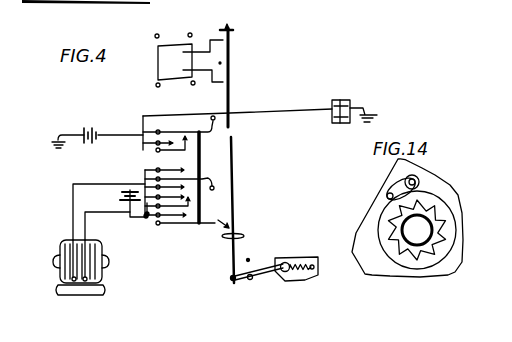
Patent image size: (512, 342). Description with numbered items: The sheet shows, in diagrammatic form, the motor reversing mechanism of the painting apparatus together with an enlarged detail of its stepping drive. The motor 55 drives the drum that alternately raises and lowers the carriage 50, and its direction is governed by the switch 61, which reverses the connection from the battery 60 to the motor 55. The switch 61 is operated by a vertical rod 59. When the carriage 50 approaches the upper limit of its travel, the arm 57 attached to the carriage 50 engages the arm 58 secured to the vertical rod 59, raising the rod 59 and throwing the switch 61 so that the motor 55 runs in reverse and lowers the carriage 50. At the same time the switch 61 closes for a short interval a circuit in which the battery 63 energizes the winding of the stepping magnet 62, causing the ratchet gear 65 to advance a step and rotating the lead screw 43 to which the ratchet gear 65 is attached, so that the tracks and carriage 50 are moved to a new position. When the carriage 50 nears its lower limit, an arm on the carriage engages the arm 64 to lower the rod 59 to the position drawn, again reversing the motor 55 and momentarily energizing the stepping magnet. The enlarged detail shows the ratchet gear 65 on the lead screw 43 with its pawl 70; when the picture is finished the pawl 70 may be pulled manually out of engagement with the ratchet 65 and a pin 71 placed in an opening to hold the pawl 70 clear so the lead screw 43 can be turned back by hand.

In FIG. 4, the carriage 50 is at (158, 66).
In FIG. 4, the arm 57 is at (210, 39).
In FIG. 4, the arm 58 is at (228, 27).
In FIG. 4, the vertical rod 59 is at (231, 90).
In FIG. 4, the stepping magnet 62 is at (342, 100).
In FIG. 4, the battery 63 is at (90, 125).
In FIG. 4, the switch 61 is at (194, 232).
In FIG. 4, the battery 60 is at (122, 196).
In FIG. 4, the motor 55 is at (103, 272).
In FIG. 4, the arm 64 is at (244, 236).
In FIG. 14, the ratchet gear 65 is at (458, 202).
In FIG. 14, the lead screw 43 is at (412, 227).
In FIG. 14, the pawl 70 is at (392, 183).
In FIG. 14, the pin 71 is at (386, 197).